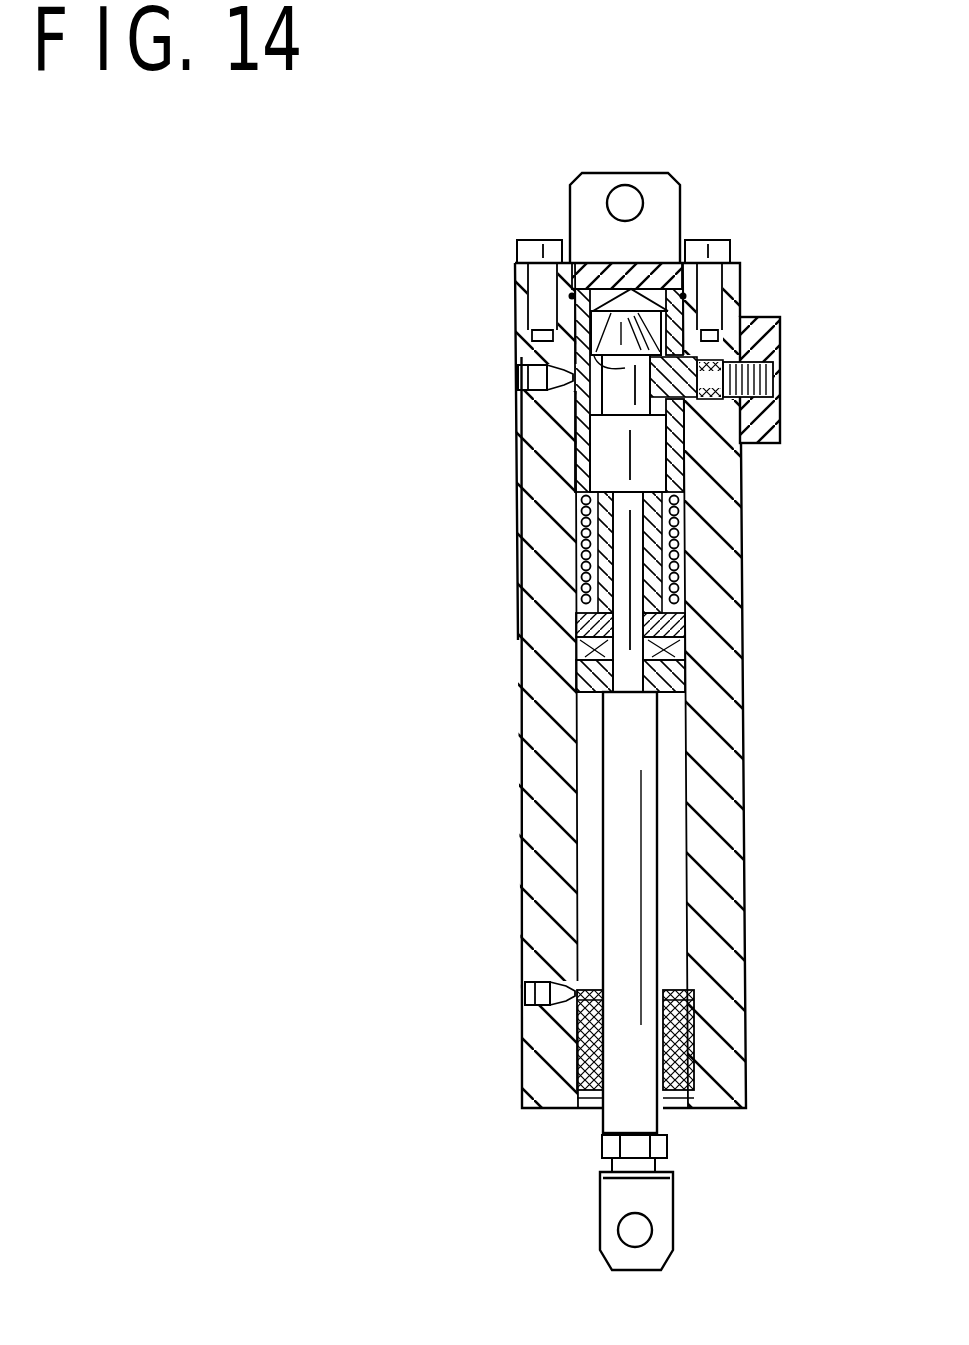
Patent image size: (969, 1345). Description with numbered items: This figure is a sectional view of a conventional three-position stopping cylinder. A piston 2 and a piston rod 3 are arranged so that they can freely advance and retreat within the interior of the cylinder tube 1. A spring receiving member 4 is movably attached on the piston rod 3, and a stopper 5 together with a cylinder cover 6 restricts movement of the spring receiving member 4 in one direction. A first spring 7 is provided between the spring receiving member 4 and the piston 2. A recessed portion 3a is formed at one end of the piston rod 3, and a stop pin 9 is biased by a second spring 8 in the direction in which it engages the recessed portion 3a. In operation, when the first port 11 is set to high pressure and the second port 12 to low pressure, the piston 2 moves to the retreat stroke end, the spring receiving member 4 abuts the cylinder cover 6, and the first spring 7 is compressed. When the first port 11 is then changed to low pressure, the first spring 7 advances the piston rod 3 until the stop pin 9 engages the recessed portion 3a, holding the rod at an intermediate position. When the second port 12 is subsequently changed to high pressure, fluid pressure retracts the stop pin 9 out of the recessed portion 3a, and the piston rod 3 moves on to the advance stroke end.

The cylinder tube 1 is at (537, 817).
The piston 2 is at (590, 680).
The piston rod 3 is at (615, 893).
The recessed portion 3a is at (596, 353).
The spring receiving member 4 is at (580, 527).
The stopper 5 is at (612, 470).
The cylinder cover 6 is at (585, 438).
The first spring 7 is at (680, 573).
The second spring 8 is at (780, 380).
The stop pin 9 is at (690, 438).
The first port 11 is at (522, 990).
The second port 12 is at (520, 372).